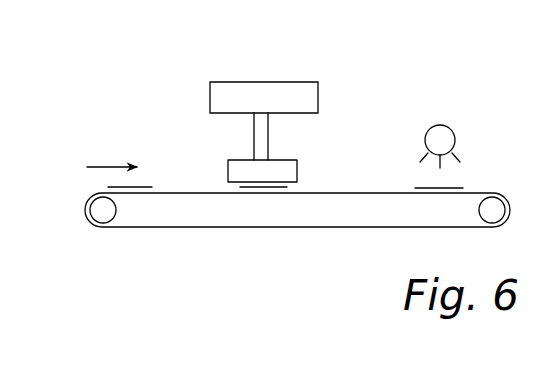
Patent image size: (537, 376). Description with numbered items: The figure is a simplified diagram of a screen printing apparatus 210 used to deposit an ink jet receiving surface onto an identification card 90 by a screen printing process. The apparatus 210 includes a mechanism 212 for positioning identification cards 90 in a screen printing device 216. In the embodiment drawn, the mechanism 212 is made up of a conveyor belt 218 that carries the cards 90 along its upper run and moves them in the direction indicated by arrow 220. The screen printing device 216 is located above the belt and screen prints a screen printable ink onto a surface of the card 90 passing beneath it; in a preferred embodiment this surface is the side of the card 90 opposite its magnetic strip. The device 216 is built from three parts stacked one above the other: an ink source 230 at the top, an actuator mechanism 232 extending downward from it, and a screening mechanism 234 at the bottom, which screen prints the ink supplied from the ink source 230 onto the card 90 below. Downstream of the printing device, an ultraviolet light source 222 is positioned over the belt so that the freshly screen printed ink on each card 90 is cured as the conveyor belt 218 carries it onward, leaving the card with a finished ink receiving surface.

The screen printing apparatus 210 is at (418, 78).
The mechanism 212 is at (90, 230).
The screen printing device 216 is at (240, 78).
The conveyor belt 218 is at (285, 228).
The arrow 220 is at (108, 165).
The ultraviolet light source 222 is at (452, 128).
The ink source 230 is at (304, 82).
The actuator mechanism 232 is at (258, 137).
The screening mechanism 234 is at (284, 173).
The identification card 90 is at (144, 186).